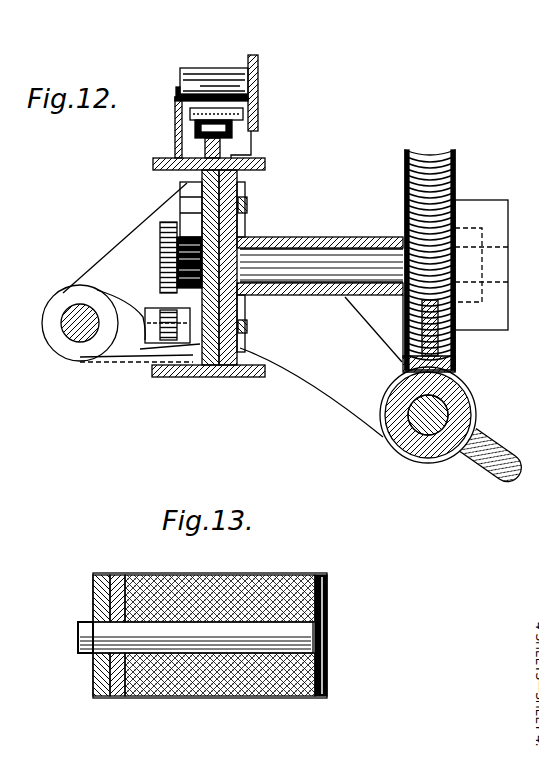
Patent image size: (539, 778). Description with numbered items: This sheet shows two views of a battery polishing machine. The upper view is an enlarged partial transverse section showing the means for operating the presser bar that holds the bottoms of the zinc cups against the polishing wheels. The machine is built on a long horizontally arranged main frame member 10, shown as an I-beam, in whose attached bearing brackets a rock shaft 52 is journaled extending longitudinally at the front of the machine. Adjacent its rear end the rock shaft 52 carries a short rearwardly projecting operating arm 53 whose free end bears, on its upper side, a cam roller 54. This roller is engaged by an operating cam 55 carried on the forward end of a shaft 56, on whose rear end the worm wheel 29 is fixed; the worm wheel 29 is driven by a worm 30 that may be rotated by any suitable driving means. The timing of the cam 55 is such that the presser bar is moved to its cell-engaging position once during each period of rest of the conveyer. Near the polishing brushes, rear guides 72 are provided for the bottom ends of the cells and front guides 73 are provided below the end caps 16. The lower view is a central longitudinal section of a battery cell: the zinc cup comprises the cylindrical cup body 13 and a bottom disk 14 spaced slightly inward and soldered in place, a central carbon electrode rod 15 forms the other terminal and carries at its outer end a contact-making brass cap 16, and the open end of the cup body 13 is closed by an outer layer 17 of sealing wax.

In FIG. 12, the main frame member 10 is at (200, 377).
In FIG. 12, the cup body 13 is at (205, 80).
In FIG. 13, the cup body 13 is at (195, 573).
In FIG. 13, the bottom disk 14 is at (327, 600).
In FIG. 13, the carbon electrode rod 15 is at (222, 632).
In FIG. 12, the brass cap 16 is at (178, 93).
In FIG. 13, the brass cap 16 is at (78, 632).
In FIG. 13, the outer layer of sealing wax 17 is at (95, 673).
In FIG. 12, the worm wheel 29 is at (408, 155).
In FIG. 12, the worm 30 is at (455, 392).
In FIG. 12, the rock shaft 52 is at (70, 318).
In FIG. 12, the operating arm 53 is at (135, 338).
In FIG. 12, the cam roller 54 is at (160, 312).
In FIG. 12, the operating cam 55 is at (160, 228).
In FIG. 12, the shaft 56 is at (300, 258).
In FIG. 12, the rear guides 72 is at (258, 92).
In FIG. 12, the front guides 73 is at (175, 126).